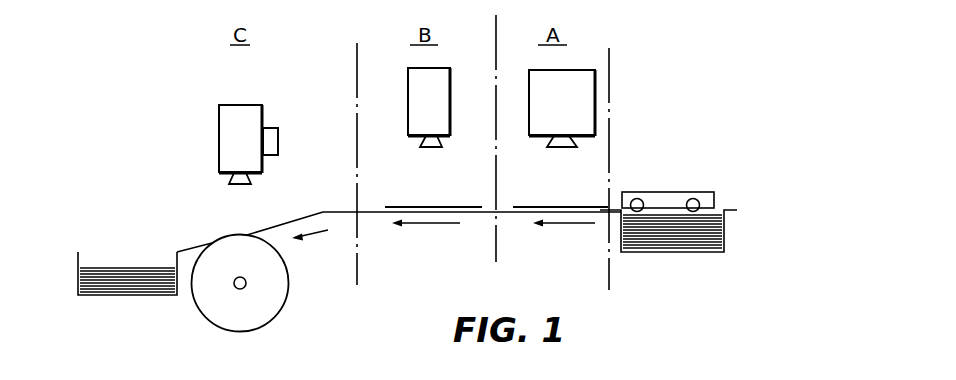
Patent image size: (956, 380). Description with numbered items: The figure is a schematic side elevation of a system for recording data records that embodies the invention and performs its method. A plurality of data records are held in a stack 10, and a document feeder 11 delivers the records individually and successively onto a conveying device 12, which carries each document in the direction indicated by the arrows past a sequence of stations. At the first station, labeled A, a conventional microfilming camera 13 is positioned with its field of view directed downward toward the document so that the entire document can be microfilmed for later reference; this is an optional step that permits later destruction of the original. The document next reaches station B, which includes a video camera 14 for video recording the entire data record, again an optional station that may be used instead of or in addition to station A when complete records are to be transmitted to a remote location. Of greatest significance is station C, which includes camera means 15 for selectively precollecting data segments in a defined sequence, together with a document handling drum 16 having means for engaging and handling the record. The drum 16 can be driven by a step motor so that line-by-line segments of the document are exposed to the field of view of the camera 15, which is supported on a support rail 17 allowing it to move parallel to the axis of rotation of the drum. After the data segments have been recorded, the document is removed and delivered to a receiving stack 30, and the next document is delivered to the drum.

The stack 10 is at (731, 229).
The document feeder 11 is at (665, 195).
The conveying device 12 is at (493, 213).
The microfilming camera 13 is at (597, 82).
The video camera 14 is at (443, 90).
The camera means 15 is at (223, 126).
The document handling drum 16 is at (278, 312).
The support rail 17 is at (278, 143).
The receiving stack 30 is at (69, 280).